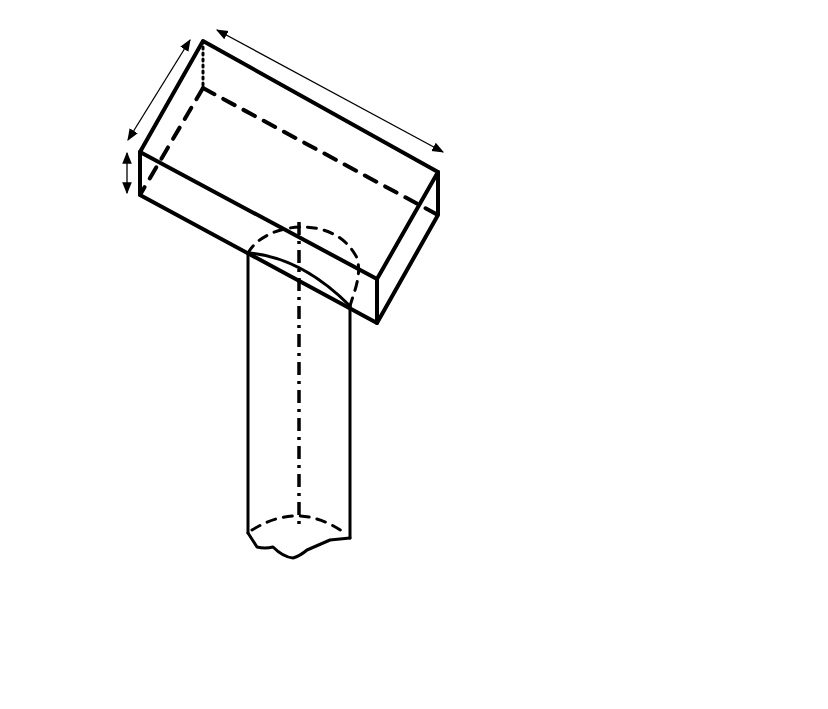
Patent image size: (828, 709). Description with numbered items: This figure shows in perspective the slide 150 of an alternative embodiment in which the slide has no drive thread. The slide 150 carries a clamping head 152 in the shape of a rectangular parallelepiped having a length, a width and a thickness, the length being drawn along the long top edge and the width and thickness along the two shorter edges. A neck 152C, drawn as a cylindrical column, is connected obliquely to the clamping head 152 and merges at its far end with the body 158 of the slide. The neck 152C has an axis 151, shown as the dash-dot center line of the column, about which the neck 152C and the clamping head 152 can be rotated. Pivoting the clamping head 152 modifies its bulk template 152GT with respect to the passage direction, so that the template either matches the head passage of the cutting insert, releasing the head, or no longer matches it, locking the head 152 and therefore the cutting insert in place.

The slide 150 is at (417, 75).
The clamping head 152 is at (370, 205).
The bulk template 152GT is at (462, 270).
The neck 152C is at (352, 347).
The axis 151 is at (298, 406).
The body 158 is at (328, 467).